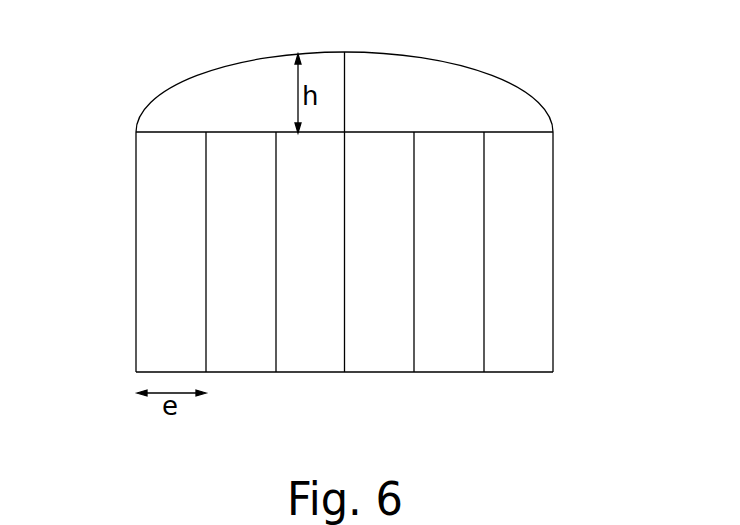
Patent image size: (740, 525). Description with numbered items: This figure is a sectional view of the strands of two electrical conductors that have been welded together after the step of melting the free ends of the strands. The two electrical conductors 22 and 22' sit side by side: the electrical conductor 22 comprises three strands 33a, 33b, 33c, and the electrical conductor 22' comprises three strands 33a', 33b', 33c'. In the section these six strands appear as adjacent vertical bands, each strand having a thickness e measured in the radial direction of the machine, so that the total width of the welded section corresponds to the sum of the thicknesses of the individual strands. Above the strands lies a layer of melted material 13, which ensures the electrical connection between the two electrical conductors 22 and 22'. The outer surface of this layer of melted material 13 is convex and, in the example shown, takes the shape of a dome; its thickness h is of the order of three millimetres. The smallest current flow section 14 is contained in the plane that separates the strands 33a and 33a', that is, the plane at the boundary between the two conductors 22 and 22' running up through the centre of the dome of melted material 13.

The layer of melted material 13 is at (453, 90).
The smallest current flow section 14 is at (347, 90).
The electrical conductor 22 is at (183, 203).
The electrical conductor 22' is at (521, 188).
The strand 33c is at (151, 296).
The strand 33b is at (235, 296).
The strand 33a is at (305, 296).
The strand 33a' is at (377, 296).
The strand 33b' is at (449, 296).
The strand 33c' is at (519, 296).